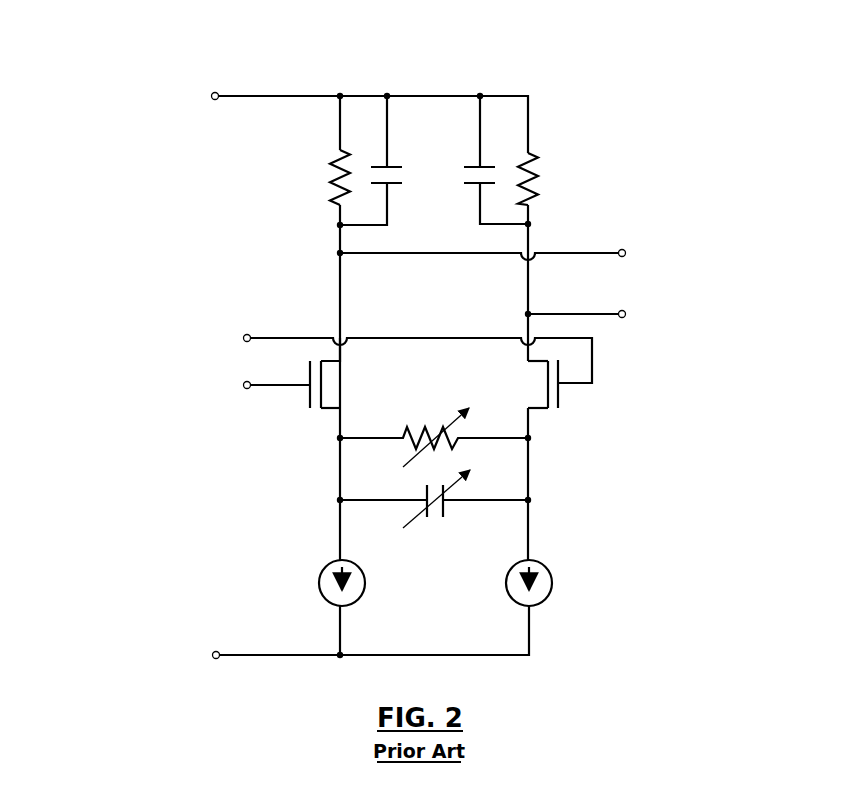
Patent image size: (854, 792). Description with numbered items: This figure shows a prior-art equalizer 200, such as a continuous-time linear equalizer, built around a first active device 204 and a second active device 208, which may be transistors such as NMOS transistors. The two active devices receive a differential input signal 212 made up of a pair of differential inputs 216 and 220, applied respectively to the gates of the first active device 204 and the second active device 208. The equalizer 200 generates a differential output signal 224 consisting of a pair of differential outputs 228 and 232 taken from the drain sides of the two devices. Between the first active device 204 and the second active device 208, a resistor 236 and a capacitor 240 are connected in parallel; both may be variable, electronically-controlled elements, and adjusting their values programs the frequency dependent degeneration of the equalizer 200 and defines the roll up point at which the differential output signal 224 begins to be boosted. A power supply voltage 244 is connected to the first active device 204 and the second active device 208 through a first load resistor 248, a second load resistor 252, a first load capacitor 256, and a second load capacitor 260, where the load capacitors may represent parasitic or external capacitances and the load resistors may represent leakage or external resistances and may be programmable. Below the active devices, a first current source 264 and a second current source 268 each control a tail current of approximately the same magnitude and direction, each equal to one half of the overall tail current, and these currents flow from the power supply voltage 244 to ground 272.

The equalizer 200 is at (104, 118).
The first active device 204 is at (308, 400).
The second active device 208 is at (560, 400).
The differential input signal 212 is at (237, 362).
The differential input 216 is at (245, 387).
The differential input 220 is at (245, 336).
The differential output signal 224 is at (627, 280).
The differential output 228 is at (623, 249).
The differential output 232 is at (624, 318).
The resistor 236 is at (403, 436).
The capacitor 240 is at (446, 516).
The power supply voltage 244 is at (213, 100).
The first load resistor 248 is at (337, 206).
The second load resistor 252 is at (530, 153).
The first load capacitor 256 is at (399, 167).
The second load capacitor 260 is at (467, 183).
The first current source 264 is at (366, 584).
The second current source 268 is at (506, 585).
The ground 272 is at (217, 652).